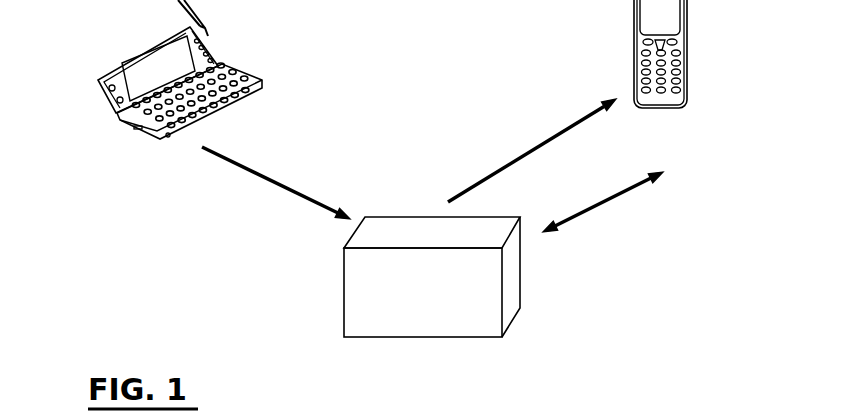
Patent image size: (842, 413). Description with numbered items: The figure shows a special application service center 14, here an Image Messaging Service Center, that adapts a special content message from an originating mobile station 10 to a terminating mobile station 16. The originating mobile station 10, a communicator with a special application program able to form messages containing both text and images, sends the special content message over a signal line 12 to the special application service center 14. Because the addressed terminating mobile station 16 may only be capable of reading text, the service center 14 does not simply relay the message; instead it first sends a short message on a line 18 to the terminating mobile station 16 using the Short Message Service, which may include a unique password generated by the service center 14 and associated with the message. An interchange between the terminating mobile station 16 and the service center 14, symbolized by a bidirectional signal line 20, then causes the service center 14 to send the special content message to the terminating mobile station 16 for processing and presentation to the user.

The originating mobile station 10 is at (145, 138).
The signal line 12 is at (225, 160).
The special application service center 14 is at (344, 292).
The terminating mobile station 16 is at (688, 47).
The line 18 is at (571, 120).
The bidirectional signal line 20 is at (574, 213).